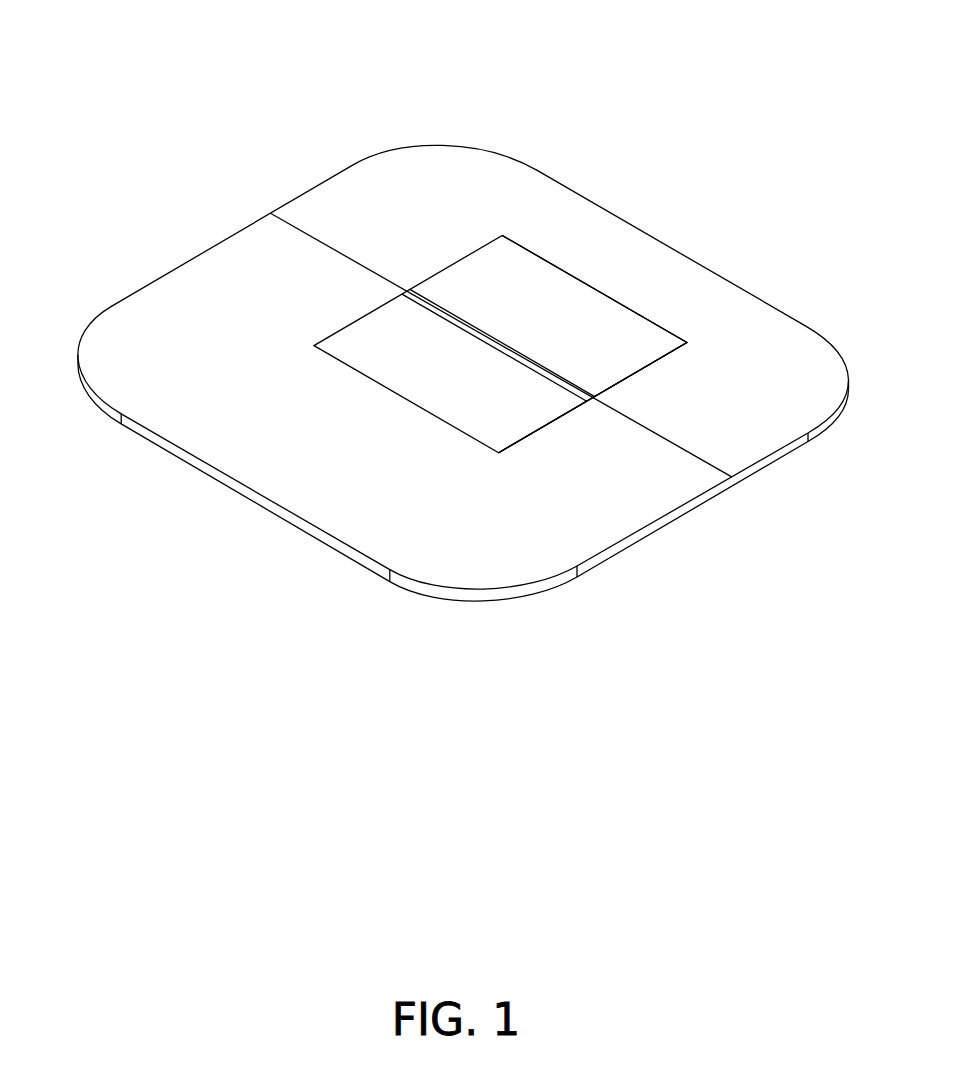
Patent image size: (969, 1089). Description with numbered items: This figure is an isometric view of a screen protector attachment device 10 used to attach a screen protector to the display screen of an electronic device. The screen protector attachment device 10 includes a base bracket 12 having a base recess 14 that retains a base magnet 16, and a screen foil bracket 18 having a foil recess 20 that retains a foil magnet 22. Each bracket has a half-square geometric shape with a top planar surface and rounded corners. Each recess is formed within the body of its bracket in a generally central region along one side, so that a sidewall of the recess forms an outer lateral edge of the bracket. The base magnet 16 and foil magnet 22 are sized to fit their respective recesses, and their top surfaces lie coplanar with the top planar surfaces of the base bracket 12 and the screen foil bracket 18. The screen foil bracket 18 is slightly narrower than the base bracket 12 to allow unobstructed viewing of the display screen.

The screen protector attachment device 10 is at (474, 337).
The base bracket 12 is at (360, 557).
The base recess 14 is at (543, 427).
The base magnet 16 is at (367, 340).
The screen foil bracket 18 is at (772, 303).
The foil recess 20 is at (478, 248).
The foil magnet 22 is at (560, 308).